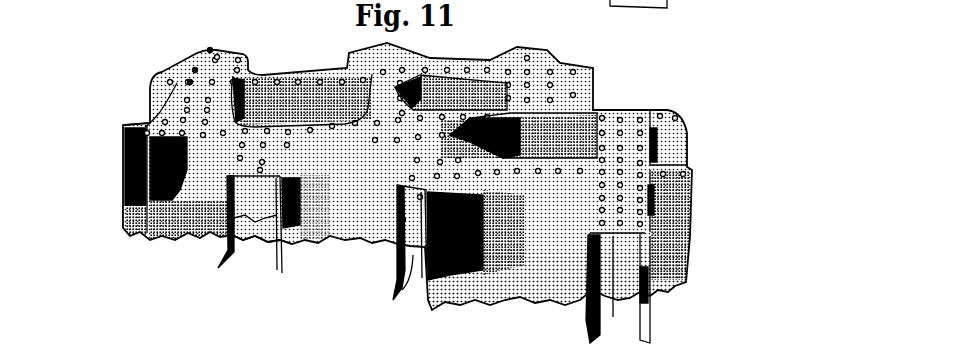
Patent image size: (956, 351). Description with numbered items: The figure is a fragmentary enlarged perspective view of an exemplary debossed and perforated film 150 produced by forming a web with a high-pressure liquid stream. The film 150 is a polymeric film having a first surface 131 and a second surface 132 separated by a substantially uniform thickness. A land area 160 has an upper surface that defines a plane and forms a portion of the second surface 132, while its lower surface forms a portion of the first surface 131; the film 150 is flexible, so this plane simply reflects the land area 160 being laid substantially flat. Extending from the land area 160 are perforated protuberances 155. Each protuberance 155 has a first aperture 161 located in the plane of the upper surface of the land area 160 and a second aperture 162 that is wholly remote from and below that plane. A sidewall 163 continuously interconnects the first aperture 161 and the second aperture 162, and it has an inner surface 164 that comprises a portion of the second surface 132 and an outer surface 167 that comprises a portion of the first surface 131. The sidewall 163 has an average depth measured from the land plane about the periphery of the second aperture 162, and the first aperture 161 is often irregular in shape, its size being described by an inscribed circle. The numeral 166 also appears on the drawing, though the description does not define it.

The debossed and perforated film 150 is at (688, 106).
The first surface 131 is at (640, 267).
The second surface 132 is at (146, 125).
The perforated protuberance 155 is at (307, 270).
The land area 160 is at (545, 65).
The first aperture 161 is at (288, 97).
The second aperture 162 is at (195, 248).
The sidewall 163 is at (277, 240).
The inner surface 164 is at (197, 182).
The studs 166 is at (190, 82).
The outer surface 167 is at (413, 282).